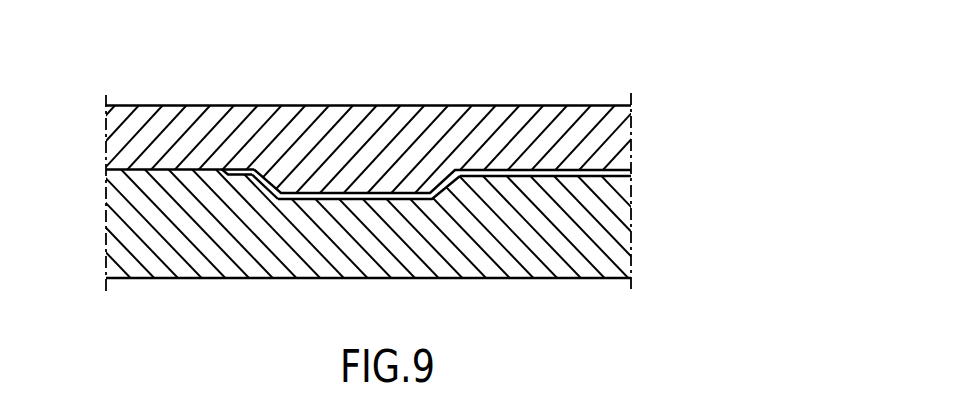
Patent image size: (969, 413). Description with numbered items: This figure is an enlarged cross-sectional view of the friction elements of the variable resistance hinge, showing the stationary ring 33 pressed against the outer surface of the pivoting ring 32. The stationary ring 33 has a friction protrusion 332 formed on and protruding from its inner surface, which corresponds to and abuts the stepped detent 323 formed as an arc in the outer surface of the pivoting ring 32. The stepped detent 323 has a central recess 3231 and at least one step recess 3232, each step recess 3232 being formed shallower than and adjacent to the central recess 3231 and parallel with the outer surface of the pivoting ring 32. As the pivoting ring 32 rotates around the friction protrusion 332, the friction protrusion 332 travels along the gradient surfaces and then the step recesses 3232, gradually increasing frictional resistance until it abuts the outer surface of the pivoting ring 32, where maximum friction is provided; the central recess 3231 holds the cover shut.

The stationary ring 33 is at (113, 135).
The friction protrusion 332 is at (388, 193).
The pivoting ring 32 is at (113, 264).
The stepped detent 323 is at (272, 197).
The central recess 3231 is at (368, 199).
The step recess 3232 is at (247, 181).